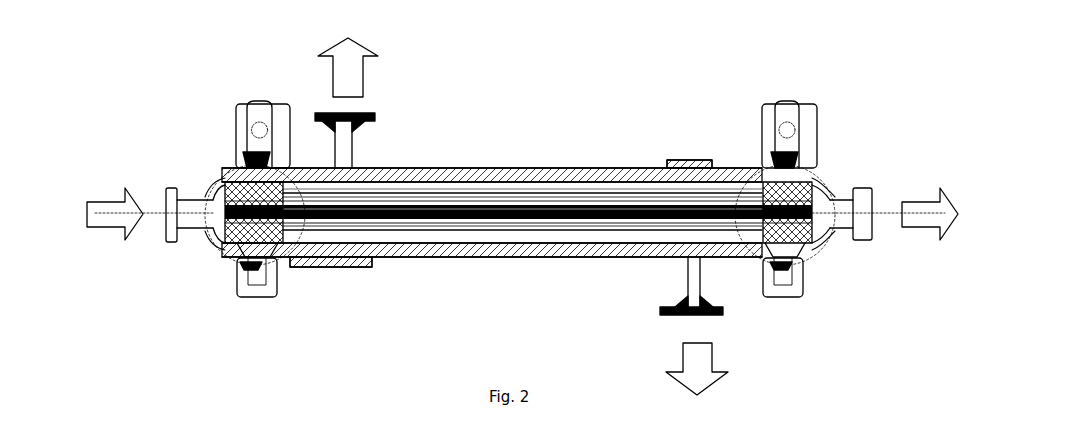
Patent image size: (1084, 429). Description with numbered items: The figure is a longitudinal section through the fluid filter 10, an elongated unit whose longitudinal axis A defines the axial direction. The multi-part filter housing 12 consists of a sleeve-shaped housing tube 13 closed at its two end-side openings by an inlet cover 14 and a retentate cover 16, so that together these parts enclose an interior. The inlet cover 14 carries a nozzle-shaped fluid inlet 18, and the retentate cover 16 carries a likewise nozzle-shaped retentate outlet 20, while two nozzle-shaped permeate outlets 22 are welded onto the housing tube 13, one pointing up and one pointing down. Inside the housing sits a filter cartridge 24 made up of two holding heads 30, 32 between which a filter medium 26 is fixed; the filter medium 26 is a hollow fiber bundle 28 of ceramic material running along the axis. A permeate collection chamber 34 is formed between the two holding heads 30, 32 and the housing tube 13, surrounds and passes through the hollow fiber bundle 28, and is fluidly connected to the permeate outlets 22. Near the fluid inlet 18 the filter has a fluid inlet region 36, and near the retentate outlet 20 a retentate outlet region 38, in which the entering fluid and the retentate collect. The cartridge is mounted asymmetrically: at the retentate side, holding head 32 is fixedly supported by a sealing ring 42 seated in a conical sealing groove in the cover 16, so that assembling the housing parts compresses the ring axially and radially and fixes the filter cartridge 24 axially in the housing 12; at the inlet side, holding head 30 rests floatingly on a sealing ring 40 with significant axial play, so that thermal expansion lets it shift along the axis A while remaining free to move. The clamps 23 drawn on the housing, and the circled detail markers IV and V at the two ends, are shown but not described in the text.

The fluid filter 10 is at (135, 125).
The filter housing 12 is at (555, 134).
The housing tube 13 is at (353, 268).
The inlet cover 14 is at (220, 240).
The retentate cover 16 is at (818, 168).
The fluid inlet 18 is at (160, 198).
The retentate outlet 20 is at (833, 227).
The permeate outlets 22 is at (338, 118).
The clamps 23 is at (235, 123).
The filter cartridge 24 is at (523, 218).
The filter medium 26 is at (465, 227).
The hollow fiber bundle 28 is at (467, 196).
The holding head 30 is at (260, 250).
The holding head 32 is at (783, 193).
The permeate collection chamber 34 is at (533, 192).
The fluid inlet region 36 is at (222, 195).
The retentate outlet region 38 is at (850, 200).
The sealing ring 40 is at (245, 268).
The sealing ring 42 is at (780, 280).
The longitudinal axis A is at (153, 222).
The detail IV is at (290, 167).
The detail V is at (812, 165).